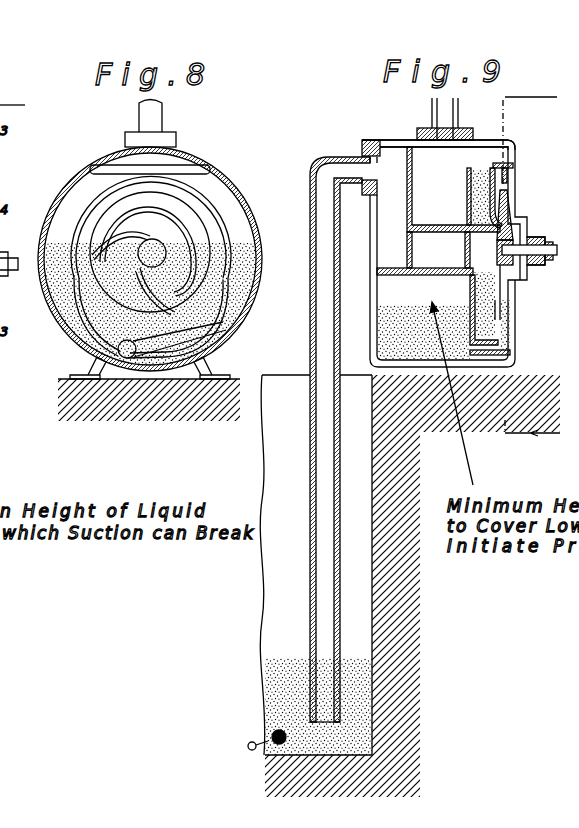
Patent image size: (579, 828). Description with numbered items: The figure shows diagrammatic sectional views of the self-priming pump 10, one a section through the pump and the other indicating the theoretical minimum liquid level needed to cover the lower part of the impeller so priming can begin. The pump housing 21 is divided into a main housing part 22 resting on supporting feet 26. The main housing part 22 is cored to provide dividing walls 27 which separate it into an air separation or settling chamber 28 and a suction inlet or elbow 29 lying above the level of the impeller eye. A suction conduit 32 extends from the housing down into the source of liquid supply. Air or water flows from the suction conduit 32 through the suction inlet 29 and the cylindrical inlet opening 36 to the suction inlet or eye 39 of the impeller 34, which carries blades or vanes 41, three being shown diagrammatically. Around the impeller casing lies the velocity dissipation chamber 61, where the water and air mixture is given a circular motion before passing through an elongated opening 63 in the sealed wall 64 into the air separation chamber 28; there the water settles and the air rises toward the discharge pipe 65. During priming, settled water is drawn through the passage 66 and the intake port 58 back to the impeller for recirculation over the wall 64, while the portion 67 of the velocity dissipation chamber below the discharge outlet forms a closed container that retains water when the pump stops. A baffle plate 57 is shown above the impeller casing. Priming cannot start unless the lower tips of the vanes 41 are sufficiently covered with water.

In FIG. 9, the pump assembly 10 is at (524, 270).
In FIG. 8, the pump housing 21 is at (252, 201).
In FIG. 8, the main housing part 22 is at (40, 294).
In FIG. 9, the main housing part 22 is at (375, 353).
In FIG. 8, the supporting feet 26 is at (220, 368).
In FIG. 9, the dividing walls 27 is at (410, 198).
In FIG. 9, the air separation chamber 28 is at (375, 325).
In FIG. 9, the suction inlet 29 is at (382, 208).
In FIG. 9, the suction conduit 32 is at (309, 339).
In FIG. 9, the impeller 34 is at (505, 211).
In FIG. 9, the cylindrical inlet opening 36 is at (437, 269).
In FIG. 9, the suction inlet or eye 39 is at (473, 246).
In FIG. 8, the blades or vanes 41 is at (189, 214).
In FIG. 8, the baffle plate 57 is at (137, 168).
In FIG. 8, the intake port 58 is at (133, 337).
In FIG. 8, the velocity dissipation chamber 61 is at (77, 191).
In FIG. 8, the elongated opening 63 is at (190, 162).
In FIG. 9, the elongated opening 63 is at (472, 156).
In FIG. 9, the sealed wall 64 is at (468, 167).
In FIG. 8, the discharge pipe 65 is at (145, 110).
In FIG. 9, the discharge pipe 65 is at (432, 108).
In FIG. 9, the passage 66 is at (504, 347).
In FIG. 9, the portion of the velocity dissipation chamber 67 is at (468, 188).